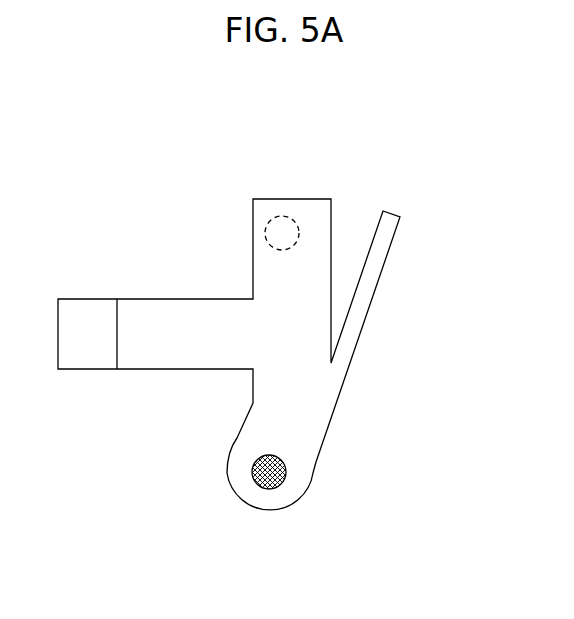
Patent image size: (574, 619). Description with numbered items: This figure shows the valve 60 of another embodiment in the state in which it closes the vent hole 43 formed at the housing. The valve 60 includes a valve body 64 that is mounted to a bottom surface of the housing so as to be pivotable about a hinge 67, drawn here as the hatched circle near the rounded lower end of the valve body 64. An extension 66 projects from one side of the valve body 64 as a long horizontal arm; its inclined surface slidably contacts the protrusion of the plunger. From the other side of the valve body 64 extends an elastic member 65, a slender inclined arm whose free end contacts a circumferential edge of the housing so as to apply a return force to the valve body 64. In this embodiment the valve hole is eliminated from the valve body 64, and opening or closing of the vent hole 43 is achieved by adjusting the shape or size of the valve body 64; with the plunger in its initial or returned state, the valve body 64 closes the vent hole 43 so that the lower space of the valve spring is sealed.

The vent hole 43 is at (282, 233).
The valve 60 is at (208, 479).
The valve body 64 is at (298, 403).
The elastic member 65 is at (370, 280).
The extension 66 is at (178, 323).
The hinge 67 is at (277, 478).